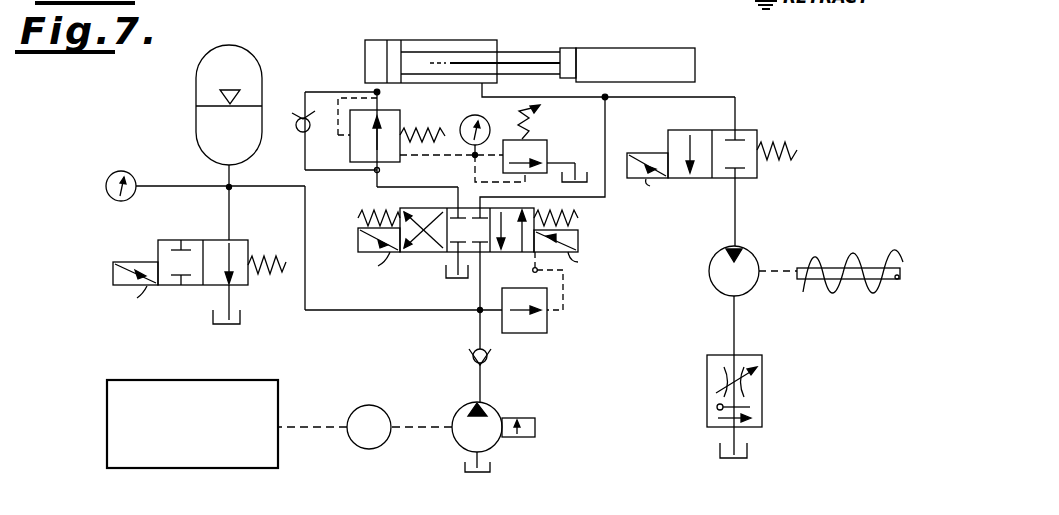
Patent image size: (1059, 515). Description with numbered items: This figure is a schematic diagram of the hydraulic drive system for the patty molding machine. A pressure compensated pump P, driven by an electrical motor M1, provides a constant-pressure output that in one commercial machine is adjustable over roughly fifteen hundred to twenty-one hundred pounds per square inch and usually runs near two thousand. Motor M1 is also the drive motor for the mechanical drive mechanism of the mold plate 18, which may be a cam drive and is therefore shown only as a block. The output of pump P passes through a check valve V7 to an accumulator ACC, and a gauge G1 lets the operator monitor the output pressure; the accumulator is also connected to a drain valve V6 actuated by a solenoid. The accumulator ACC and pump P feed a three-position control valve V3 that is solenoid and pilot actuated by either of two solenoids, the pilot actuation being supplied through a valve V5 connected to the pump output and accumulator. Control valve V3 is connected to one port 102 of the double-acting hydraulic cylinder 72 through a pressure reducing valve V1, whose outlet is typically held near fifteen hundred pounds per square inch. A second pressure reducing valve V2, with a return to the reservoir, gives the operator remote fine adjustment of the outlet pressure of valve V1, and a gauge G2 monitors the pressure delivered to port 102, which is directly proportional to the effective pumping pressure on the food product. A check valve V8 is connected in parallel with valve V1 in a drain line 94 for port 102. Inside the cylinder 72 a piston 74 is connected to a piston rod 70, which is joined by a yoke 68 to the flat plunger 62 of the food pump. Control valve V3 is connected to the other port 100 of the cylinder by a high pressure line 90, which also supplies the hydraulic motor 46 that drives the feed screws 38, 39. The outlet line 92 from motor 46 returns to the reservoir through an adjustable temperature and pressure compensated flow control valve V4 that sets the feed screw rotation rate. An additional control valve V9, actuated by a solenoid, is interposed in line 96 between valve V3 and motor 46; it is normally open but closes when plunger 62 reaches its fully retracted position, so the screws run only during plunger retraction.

The piston 74 is at (396, 40).
The double-acting hydraulic cylinder 72 is at (432, 38).
The piston rod 70 is at (513, 53).
The yoke 68 is at (567, 47).
The plunger 62 is at (652, 30).
The port 100 is at (485, 95).
The port 102 is at (376, 91).
The drain line 94 is at (304, 154).
The high pressure line 90 is at (569, 120).
The line 96 is at (682, 114).
The outlet line 92 is at (733, 227).
The hydraulic motor 46 is at (719, 295).
The feed screw 38 is at (812, 250).
The screw shaft 39 is at (812, 280).
The mold plate 18 is at (192, 424).
The accumulator ACC is at (196, 80).
The gauge G1 is at (107, 178).
The gauge G2 is at (471, 116).
The pressure reducing valve V1 is at (350, 144).
The second pressure reducing valve V2 is at (547, 146).
The three-position control valve V3 is at (420, 253).
The flow control valve V4 is at (762, 401).
The valve V5 is at (540, 334).
The drain valve V6 is at (196, 240).
The check valve V7 is at (469, 363).
The check valve V8 is at (291, 113).
The control valve V9 is at (753, 130).
The pump P is at (497, 405).
The electrical motor M1 is at (369, 427).